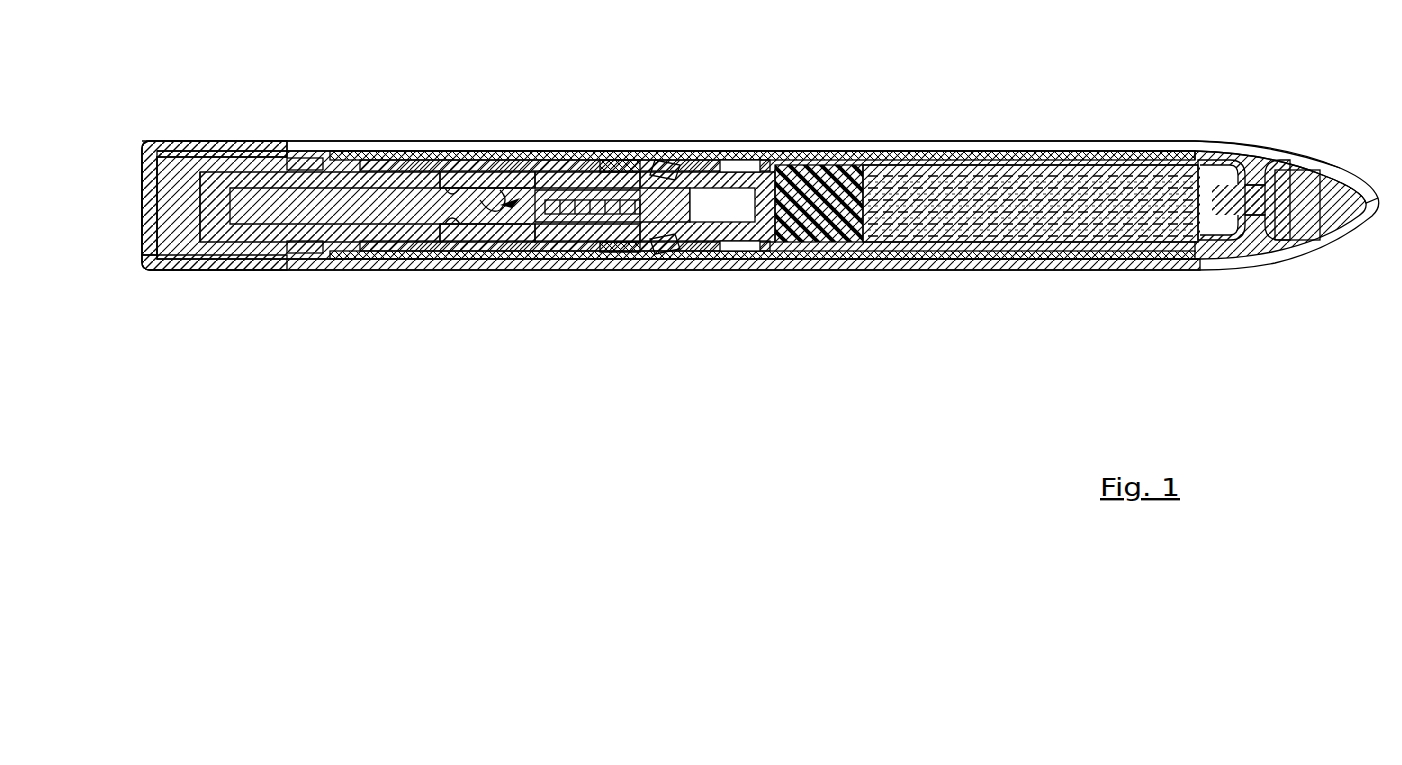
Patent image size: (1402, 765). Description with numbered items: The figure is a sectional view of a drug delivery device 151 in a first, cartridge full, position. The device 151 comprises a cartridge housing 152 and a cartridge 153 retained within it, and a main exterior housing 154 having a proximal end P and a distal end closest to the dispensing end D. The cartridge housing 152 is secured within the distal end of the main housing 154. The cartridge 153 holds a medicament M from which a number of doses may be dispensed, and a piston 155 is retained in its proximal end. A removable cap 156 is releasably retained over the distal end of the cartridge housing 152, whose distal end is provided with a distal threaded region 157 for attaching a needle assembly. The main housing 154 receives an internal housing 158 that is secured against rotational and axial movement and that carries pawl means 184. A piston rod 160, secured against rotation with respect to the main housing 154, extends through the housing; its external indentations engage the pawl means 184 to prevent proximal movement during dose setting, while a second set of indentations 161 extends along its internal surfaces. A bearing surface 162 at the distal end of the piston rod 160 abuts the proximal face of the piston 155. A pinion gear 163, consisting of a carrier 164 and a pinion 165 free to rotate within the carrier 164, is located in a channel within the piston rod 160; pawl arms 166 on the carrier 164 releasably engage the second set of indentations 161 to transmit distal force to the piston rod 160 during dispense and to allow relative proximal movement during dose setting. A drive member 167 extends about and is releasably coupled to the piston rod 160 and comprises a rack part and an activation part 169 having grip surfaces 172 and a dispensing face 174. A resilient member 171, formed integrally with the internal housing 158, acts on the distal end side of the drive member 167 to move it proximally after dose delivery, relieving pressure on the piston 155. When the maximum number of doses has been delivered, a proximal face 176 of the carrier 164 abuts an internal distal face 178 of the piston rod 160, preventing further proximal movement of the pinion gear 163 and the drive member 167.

The drug delivery device 151 is at (945, 88).
The cartridge housing 152 is at (1000, 272).
The cartridge 153 is at (1090, 266).
The main housing 154 is at (381, 150).
The piston 155 is at (818, 270).
The removable cap 156 is at (1275, 140).
The distal threaded region 157 is at (1243, 268).
The internal housing 158 is at (497, 162).
The piston rod 160 is at (268, 152).
The second set of indentations 161 is at (458, 160).
The bearing surface 162 is at (782, 162).
The pinion gear 163 is at (496, 250).
The carrier 164 is at (543, 163).
The pinion 165 is at (640, 250).
The pawl arms 166 is at (607, 160).
The drive member 167 is at (205, 138).
The activation part 169 is at (160, 141).
The resilient member 171 is at (296, 262).
The grip surfaces 172 is at (190, 272).
The dispensing face 174 is at (140, 212).
The proximal face 176 is at (545, 245).
The internal distal face 178 is at (236, 245).
The pawl means 184 is at (720, 160).
The medicament M is at (1096, 190).
The dispensing end D is at (1350, 148).
The proximal end P is at (363, 305).